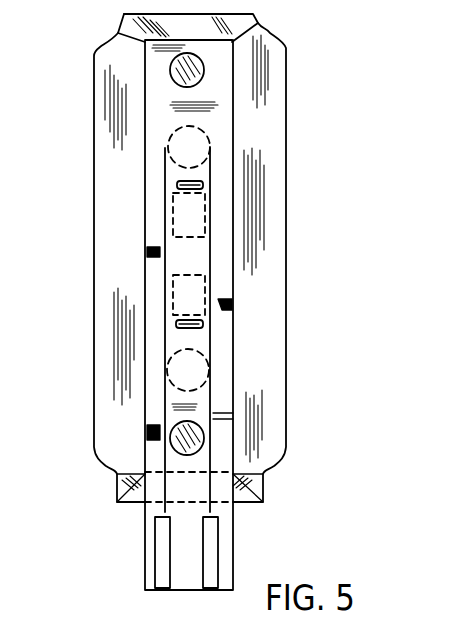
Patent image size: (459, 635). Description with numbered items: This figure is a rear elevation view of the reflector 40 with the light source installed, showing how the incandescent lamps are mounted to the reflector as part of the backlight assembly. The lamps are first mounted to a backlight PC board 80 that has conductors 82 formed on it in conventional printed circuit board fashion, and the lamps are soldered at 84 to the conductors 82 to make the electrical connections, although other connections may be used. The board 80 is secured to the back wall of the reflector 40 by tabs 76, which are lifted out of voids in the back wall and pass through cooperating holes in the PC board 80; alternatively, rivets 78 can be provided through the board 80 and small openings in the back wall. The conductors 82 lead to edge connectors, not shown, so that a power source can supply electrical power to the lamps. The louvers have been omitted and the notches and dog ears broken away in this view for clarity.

The reflector 40 is at (112, 313).
The tabs 76 is at (203, 184).
The rivets 78 is at (204, 65).
The backlight PC board 80 is at (223, 395).
The conductors 82 is at (210, 248).
The solder connection 84 is at (165, 148).